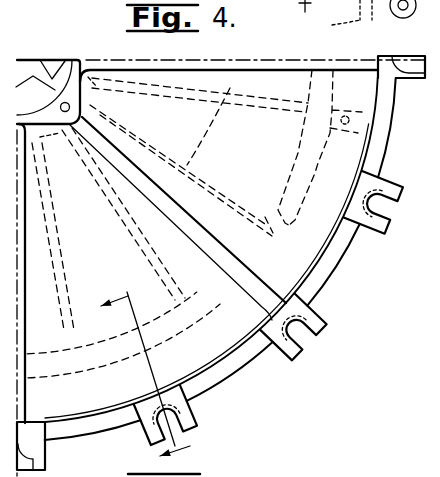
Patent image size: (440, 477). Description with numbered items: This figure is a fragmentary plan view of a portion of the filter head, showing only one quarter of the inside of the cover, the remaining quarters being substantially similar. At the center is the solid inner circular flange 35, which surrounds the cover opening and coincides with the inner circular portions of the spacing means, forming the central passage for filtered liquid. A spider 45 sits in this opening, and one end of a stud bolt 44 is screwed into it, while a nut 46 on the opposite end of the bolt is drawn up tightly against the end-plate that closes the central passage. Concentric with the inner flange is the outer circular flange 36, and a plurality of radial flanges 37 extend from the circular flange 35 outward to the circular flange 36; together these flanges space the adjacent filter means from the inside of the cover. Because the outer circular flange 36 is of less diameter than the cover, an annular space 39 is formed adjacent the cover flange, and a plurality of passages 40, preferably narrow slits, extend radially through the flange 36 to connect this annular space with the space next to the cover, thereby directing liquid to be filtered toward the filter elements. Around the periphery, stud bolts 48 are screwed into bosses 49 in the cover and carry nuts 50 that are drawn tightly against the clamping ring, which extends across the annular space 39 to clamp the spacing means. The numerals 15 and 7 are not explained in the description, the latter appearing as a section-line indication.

The spider 45 is at (60, 66).
The circular flange 35 is at (170, 204).
The radial flanges 37 is at (208, 126).
The passages 40 is at (298, 153).
The stud bolts 48 is at (380, 134).
The bosses 49 is at (390, 103).
The circular flange 36 is at (292, 227).
The annular space 39 is at (300, 262).
The end block 15 is at (386, 55).
The section line 7- 7 is at (151, 367).
The nuts 50 is at (351, 13).
The nut 46 is at (9, 14).
The stud bolt 44 is at (46, 6).